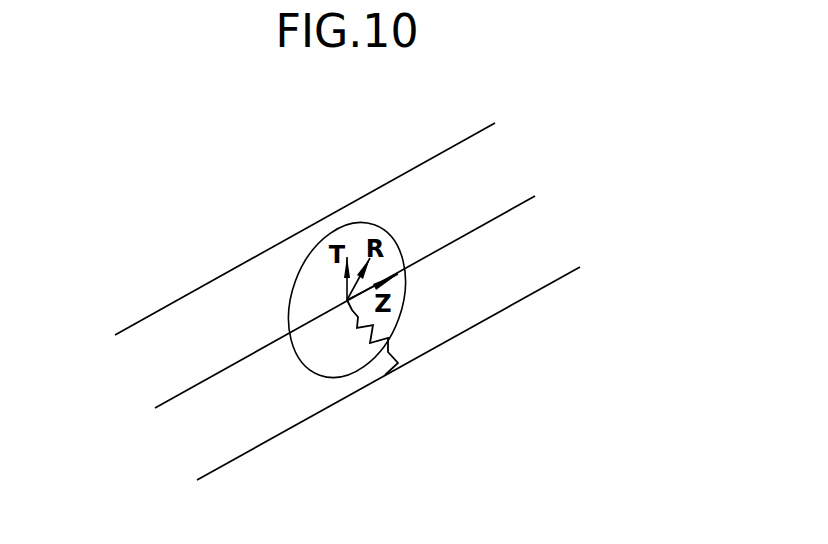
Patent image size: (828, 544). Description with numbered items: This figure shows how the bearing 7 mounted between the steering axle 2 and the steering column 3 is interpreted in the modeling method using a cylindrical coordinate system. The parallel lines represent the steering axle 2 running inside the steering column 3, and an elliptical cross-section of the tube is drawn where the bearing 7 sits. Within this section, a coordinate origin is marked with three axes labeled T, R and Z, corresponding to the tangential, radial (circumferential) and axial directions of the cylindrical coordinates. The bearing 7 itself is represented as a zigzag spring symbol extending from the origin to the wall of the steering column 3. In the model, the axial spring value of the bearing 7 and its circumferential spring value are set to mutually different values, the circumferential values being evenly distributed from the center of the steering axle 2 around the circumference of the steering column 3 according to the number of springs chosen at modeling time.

The steering axle 2 is at (456, 241).
The steering column 3 is at (193, 292).
The bearing 7 is at (385, 375).